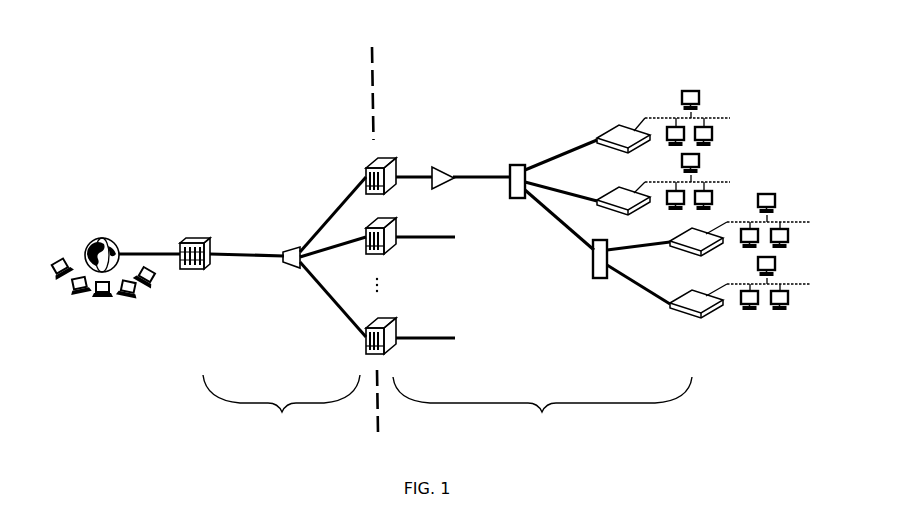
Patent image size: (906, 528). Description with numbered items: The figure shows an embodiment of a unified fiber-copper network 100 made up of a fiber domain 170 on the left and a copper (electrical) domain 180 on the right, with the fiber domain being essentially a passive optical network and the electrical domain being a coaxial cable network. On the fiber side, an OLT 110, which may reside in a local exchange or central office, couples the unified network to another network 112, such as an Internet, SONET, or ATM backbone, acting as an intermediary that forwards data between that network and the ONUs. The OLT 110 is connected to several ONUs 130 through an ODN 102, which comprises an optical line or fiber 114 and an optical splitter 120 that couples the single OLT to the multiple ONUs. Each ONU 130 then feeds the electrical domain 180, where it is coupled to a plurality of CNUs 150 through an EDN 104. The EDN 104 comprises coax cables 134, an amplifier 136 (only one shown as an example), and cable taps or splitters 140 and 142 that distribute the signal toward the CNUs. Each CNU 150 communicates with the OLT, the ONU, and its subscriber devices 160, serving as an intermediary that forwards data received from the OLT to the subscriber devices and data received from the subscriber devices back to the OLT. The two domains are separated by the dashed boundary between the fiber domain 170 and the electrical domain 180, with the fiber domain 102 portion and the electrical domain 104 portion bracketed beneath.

The unified fiber-copper network 100 is at (163, 111).
The optical distribution network (ODN) 102 is at (281, 401).
The electrical distribution network (EDN) 104 is at (542, 402).
The optical line terminal (OLT) 110 is at (203, 271).
The network 112 is at (115, 302).
The fiber 114 is at (229, 259).
The optical splitter 120 is at (285, 265).
The optical network unit (ONU) 130 is at (398, 195).
The coax cable 134 is at (407, 173).
The amplifier 136 is at (450, 186).
The cable tap or splitter 140 is at (511, 198).
The cable tap or splitter 142 is at (605, 280).
The coaxial network unit (CNU) 150 is at (638, 151).
The subscriber device 160 is at (696, 90).
The fiber domain 170 is at (263, 55).
The copper (electrical) domain 180 is at (477, 55).